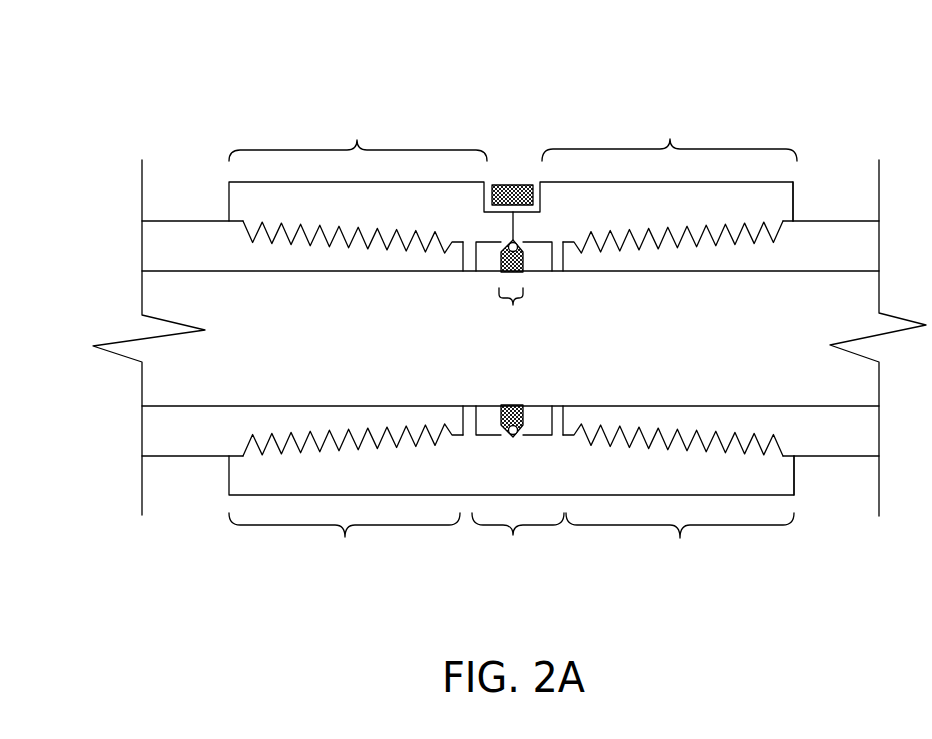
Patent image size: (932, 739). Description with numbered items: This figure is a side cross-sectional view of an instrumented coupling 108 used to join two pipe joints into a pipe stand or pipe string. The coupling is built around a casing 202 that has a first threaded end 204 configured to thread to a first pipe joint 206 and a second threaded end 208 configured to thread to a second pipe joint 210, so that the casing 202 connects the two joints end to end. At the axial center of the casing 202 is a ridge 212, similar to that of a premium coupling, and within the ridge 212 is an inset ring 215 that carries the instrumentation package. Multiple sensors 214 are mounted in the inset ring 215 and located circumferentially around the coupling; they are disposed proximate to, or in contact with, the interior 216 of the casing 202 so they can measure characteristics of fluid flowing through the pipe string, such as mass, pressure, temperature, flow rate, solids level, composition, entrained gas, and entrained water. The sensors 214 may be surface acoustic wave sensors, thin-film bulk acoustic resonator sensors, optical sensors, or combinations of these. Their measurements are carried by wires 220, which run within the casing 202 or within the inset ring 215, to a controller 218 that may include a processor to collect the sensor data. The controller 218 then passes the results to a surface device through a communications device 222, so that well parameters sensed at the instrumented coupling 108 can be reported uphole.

The instrumented coupling 108 is at (540, 644).
The casing 202 is at (797, 210).
The first threaded end 204 is at (669, 320).
The first pipe joint 206 is at (837, 221).
The second threaded end 208 is at (358, 318).
The second pipe joint 210 is at (202, 221).
The ridge 212 is at (513, 408).
The sensors 214 is at (515, 406).
The inset ring 215 is at (516, 316).
The interior 216 is at (702, 358).
The controller 218 is at (502, 182).
The wires 220 is at (512, 232).
The communications device 222 is at (518, 272).